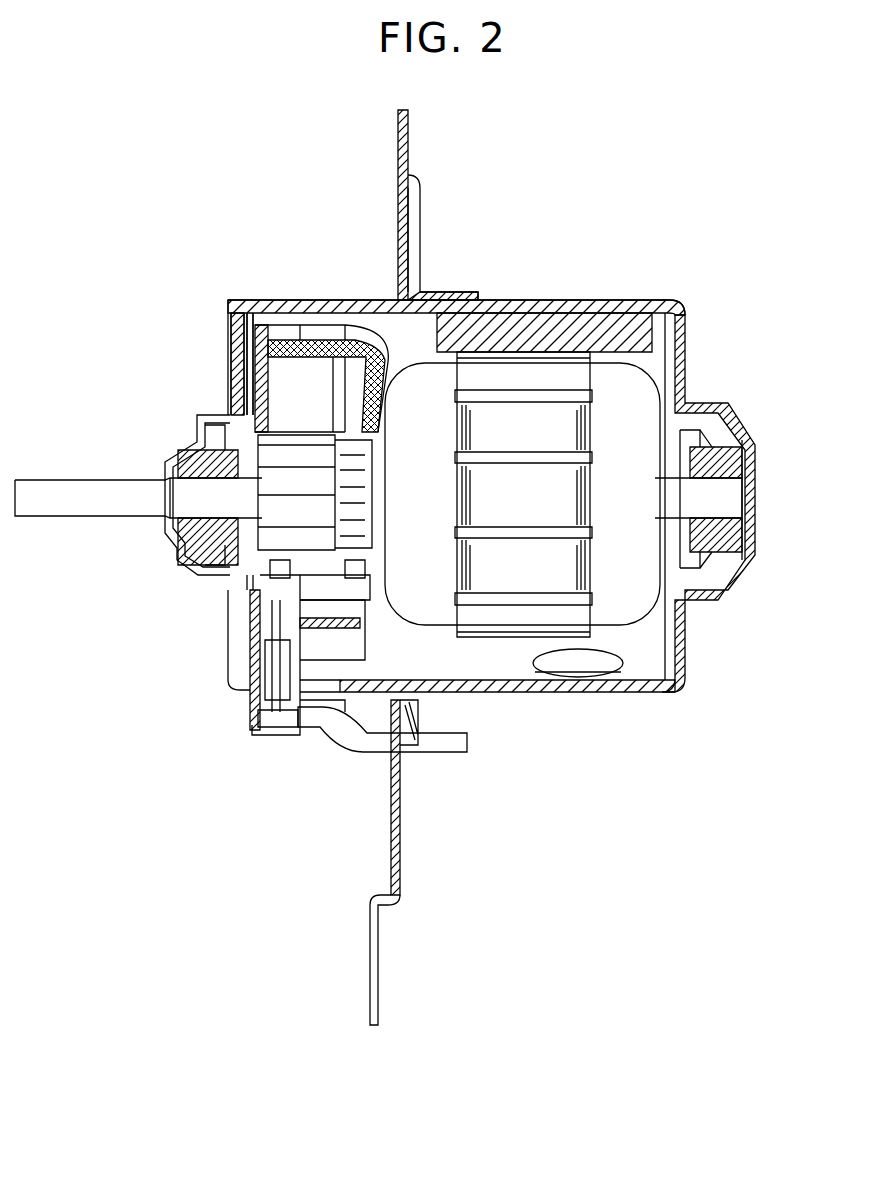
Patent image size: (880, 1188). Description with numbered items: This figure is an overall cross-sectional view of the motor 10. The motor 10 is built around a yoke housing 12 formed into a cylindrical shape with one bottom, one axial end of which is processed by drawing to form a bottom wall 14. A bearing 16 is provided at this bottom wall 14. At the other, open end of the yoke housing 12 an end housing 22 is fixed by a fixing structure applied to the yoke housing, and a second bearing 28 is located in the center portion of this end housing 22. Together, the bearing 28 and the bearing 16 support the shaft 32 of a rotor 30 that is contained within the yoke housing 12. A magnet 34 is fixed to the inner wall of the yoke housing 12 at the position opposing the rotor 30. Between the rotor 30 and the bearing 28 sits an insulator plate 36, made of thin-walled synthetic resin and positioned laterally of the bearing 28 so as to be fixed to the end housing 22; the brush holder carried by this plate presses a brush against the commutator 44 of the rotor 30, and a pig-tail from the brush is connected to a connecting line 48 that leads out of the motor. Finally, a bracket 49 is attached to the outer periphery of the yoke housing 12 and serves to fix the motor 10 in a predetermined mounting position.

The motor 10 is at (208, 280).
The yoke housing 12 is at (345, 298).
The bottom wall 14 is at (688, 372).
The bearing 16 is at (730, 462).
The end housing 22 is at (232, 385).
The bearing 28 is at (190, 543).
The rotor 30 is at (505, 625).
The shaft 32 is at (124, 478).
The magnet 34 is at (572, 322).
The insulator plate 36 is at (270, 385).
The commutator 44 is at (236, 590).
The connecting line 48 is at (330, 740).
The bracket 49 is at (391, 835).